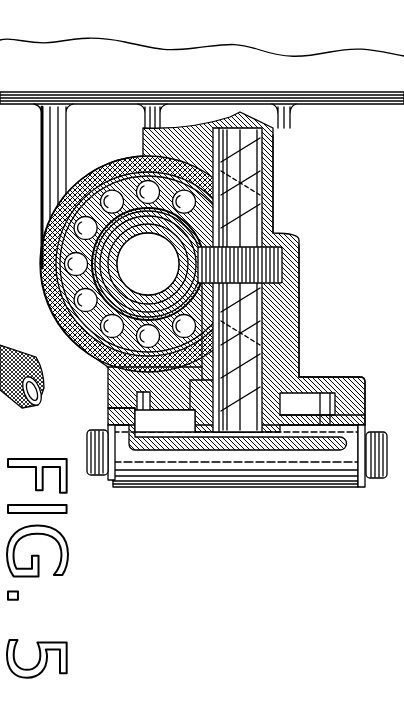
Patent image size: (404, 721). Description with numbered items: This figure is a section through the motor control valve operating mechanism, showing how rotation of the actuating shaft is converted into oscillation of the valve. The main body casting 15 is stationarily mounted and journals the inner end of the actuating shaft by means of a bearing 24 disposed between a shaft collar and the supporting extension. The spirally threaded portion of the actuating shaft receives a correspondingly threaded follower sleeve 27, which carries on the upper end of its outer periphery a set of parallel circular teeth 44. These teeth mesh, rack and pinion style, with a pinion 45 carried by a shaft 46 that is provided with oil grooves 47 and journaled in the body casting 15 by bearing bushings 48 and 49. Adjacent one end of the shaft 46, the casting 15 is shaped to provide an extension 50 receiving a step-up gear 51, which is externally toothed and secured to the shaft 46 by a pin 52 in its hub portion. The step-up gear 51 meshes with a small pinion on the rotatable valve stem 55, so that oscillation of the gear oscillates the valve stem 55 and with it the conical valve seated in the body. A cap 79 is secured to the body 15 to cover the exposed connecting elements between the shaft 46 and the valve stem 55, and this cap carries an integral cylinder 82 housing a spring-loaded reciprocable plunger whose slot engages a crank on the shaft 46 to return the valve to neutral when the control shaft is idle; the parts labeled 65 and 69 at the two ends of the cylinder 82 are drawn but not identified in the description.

The main body casting 15 is at (318, 108).
The bearing 24 is at (41, 190).
The follower sleeve 27 is at (139, 222).
The parallel circular teeth 44 is at (93, 356).
The valve stem 55 is at (148, 264).
The pinion 45 is at (299, 288).
The shaft 46 is at (247, 153).
The oil grooves 47 is at (284, 218).
The bearing bushing 48 is at (280, 151).
The bearing bushing 49 is at (299, 352).
The extension 50 is at (352, 388).
The step-up gear 51 is at (160, 412).
The pin 52 is at (277, 420).
The knurled knob 65 is at (100, 477).
The lock nut 69 is at (122, 481).
The cap 79 is at (108, 425).
The cylinder 82 is at (229, 484).